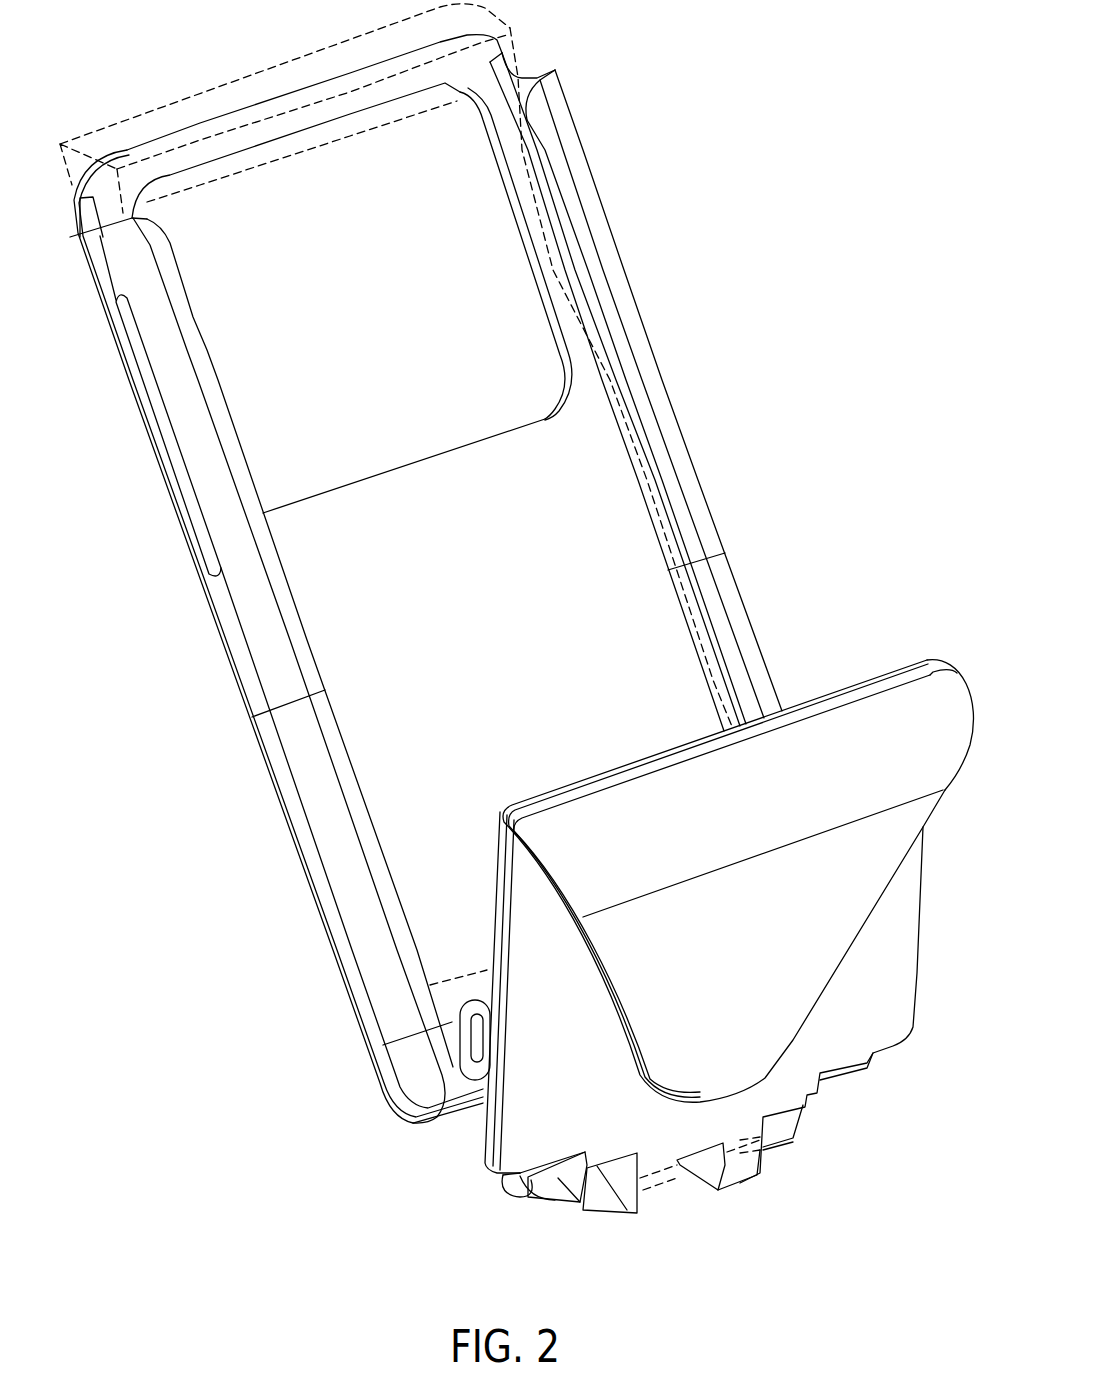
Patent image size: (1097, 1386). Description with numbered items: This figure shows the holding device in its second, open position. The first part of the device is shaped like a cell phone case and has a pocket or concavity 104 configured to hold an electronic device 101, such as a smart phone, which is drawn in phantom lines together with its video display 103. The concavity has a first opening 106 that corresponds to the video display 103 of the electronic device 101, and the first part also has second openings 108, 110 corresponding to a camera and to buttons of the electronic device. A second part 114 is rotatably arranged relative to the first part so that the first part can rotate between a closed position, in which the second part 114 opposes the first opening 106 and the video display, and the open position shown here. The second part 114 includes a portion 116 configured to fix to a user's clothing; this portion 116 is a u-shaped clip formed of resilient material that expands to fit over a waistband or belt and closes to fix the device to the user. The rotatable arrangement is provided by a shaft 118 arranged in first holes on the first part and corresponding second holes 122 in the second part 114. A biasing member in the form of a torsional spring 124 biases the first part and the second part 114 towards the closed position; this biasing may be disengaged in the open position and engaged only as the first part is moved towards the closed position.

The electronic device 101 is at (507, 35).
The video display 103 is at (457, 101).
The concavity 104 is at (476, 541).
The first opening 106 is at (653, 453).
The second opening 108 is at (523, 233).
The second opening 110 is at (547, 188).
The second part 114 is at (497, 870).
The portion 116 is at (590, 913).
The shaft 118 is at (515, 1192).
The second holes 122 is at (667, 1217).
The torsional spring 124 is at (497, 1004).